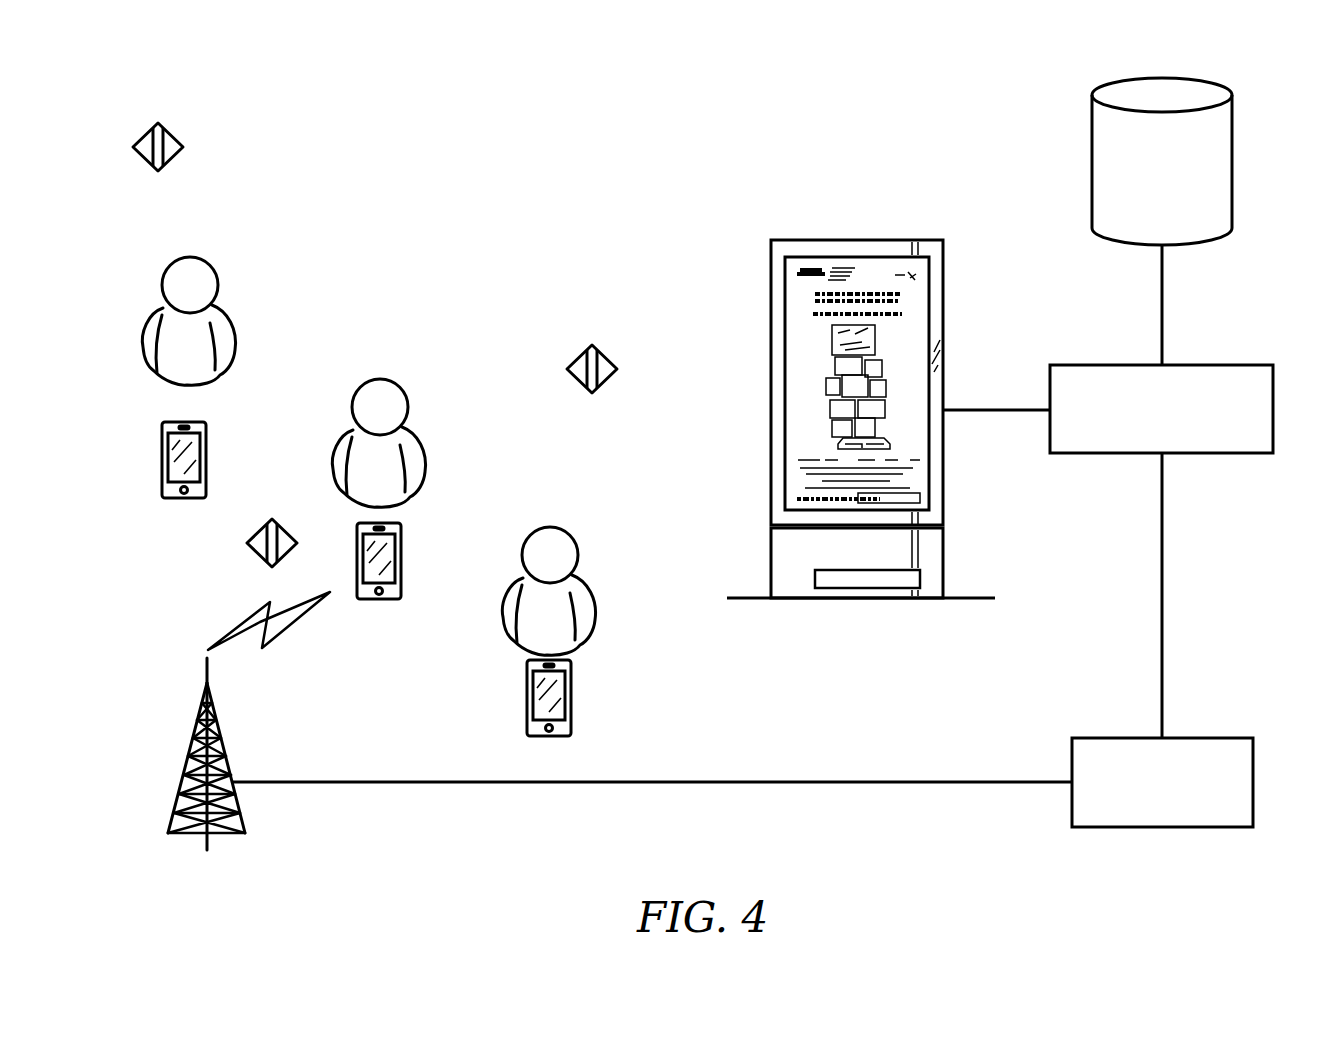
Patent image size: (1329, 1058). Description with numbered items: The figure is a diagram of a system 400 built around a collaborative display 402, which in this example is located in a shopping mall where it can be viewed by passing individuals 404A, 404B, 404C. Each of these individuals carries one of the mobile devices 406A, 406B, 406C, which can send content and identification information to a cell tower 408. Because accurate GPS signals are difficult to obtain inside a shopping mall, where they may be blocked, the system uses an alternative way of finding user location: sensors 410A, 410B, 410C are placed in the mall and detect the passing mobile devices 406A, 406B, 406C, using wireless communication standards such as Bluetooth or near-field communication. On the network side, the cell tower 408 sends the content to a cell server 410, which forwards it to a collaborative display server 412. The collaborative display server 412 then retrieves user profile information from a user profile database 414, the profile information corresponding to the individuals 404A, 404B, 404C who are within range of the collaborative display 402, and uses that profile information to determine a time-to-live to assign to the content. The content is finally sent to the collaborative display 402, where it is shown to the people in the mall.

The system 400 is at (686, 103).
The collaborative display 402 is at (893, 240).
The individual 404A is at (213, 268).
The individual 404B is at (403, 391).
The individual 404C is at (572, 537).
The mobile device 406A is at (207, 448).
The mobile device 406B is at (403, 558).
The mobile device 406C is at (571, 695).
The cell tower 408 is at (224, 745).
The cell server 410 is at (1225, 737).
The sensor 410A is at (170, 132).
The sensor 410B is at (251, 553).
The sensor 410C is at (603, 355).
The collaborative display server 412 is at (1225, 364).
The user profile database 414 is at (1235, 140).